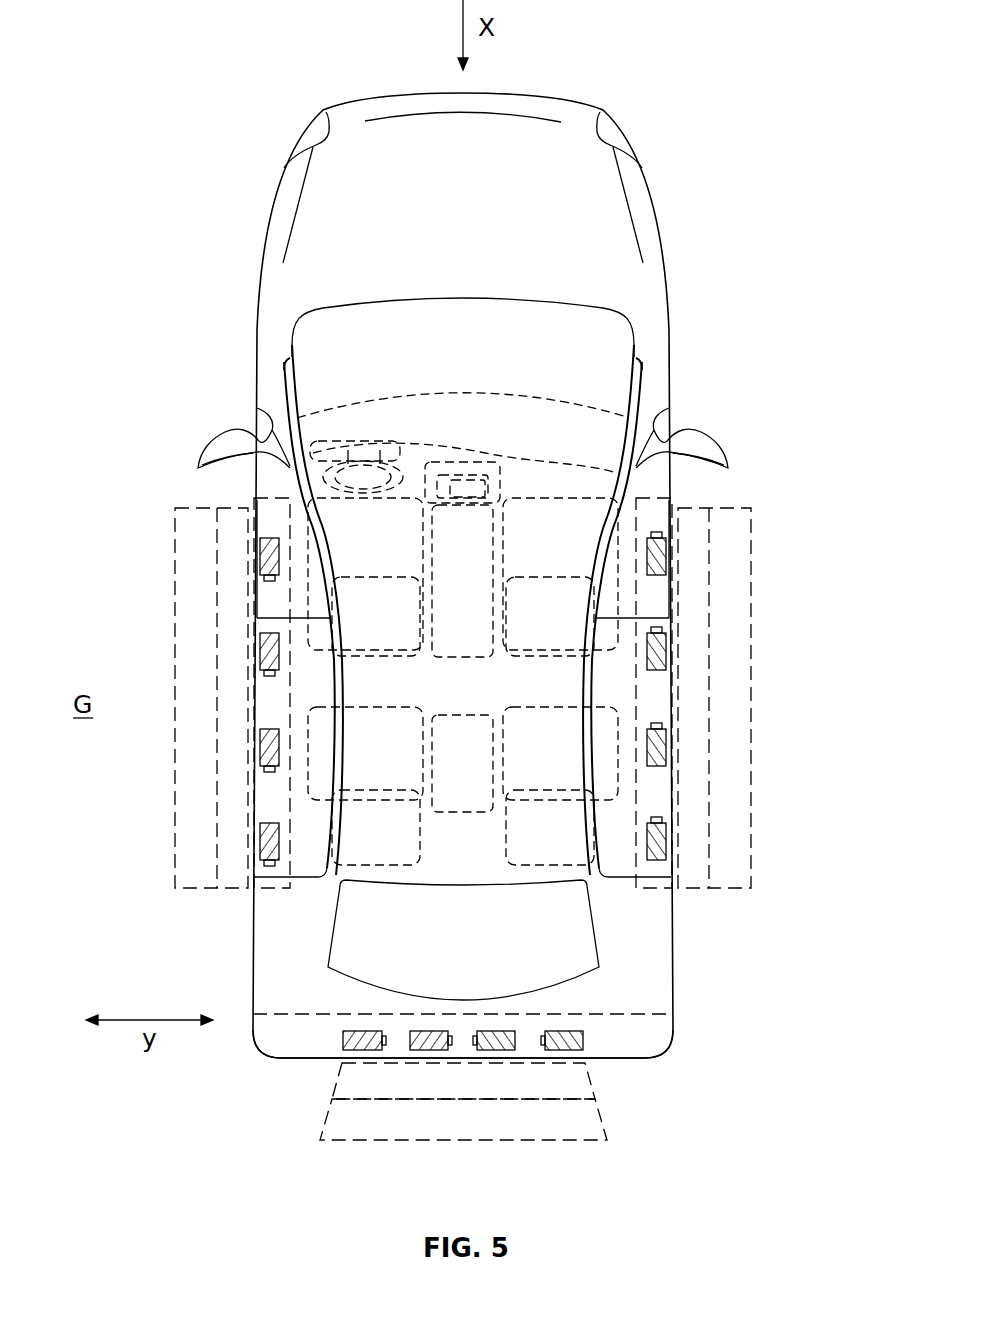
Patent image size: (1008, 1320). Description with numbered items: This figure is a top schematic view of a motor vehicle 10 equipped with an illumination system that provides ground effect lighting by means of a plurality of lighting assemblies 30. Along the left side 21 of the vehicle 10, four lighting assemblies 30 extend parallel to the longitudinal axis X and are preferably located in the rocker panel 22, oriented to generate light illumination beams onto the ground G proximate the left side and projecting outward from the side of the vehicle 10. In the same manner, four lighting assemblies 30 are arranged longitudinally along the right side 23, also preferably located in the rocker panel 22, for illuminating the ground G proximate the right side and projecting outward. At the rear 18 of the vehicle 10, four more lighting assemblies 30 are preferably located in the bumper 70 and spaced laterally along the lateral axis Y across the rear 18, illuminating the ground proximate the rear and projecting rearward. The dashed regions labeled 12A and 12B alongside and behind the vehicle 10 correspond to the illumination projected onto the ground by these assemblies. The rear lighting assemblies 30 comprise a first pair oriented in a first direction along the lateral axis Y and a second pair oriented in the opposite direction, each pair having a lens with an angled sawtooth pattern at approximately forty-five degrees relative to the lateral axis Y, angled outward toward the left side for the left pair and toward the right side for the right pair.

The motor vehicle 10 is at (756, 288).
The first sensing region 12A is at (235, 893).
The second sensing region 12B is at (190, 893).
The rear 18 is at (660, 1052).
The left side 21 is at (257, 385).
The rocker panel 22 is at (264, 510).
The right side 23 is at (670, 385).
The lighting assemblies 30 is at (257, 638).
The bumper 70 is at (630, 1013).